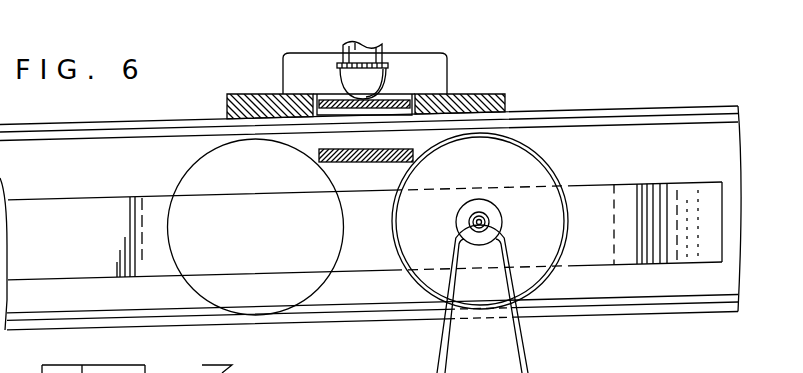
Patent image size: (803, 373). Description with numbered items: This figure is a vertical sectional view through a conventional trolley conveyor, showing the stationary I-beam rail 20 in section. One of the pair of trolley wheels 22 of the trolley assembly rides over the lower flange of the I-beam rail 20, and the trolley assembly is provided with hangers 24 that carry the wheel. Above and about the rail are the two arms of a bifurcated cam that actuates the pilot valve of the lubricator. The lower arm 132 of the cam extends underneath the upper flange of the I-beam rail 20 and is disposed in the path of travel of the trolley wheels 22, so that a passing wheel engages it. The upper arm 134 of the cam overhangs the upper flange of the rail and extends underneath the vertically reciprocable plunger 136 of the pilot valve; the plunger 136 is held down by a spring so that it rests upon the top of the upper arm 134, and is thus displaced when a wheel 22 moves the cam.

The I-beam rail 20 is at (633, 125).
The trolley wheels 22 is at (533, 178).
The hangers 24 is at (508, 361).
The lower arm 132 is at (368, 162).
The upper arm 134 is at (395, 100).
The plunger 136 is at (386, 54).